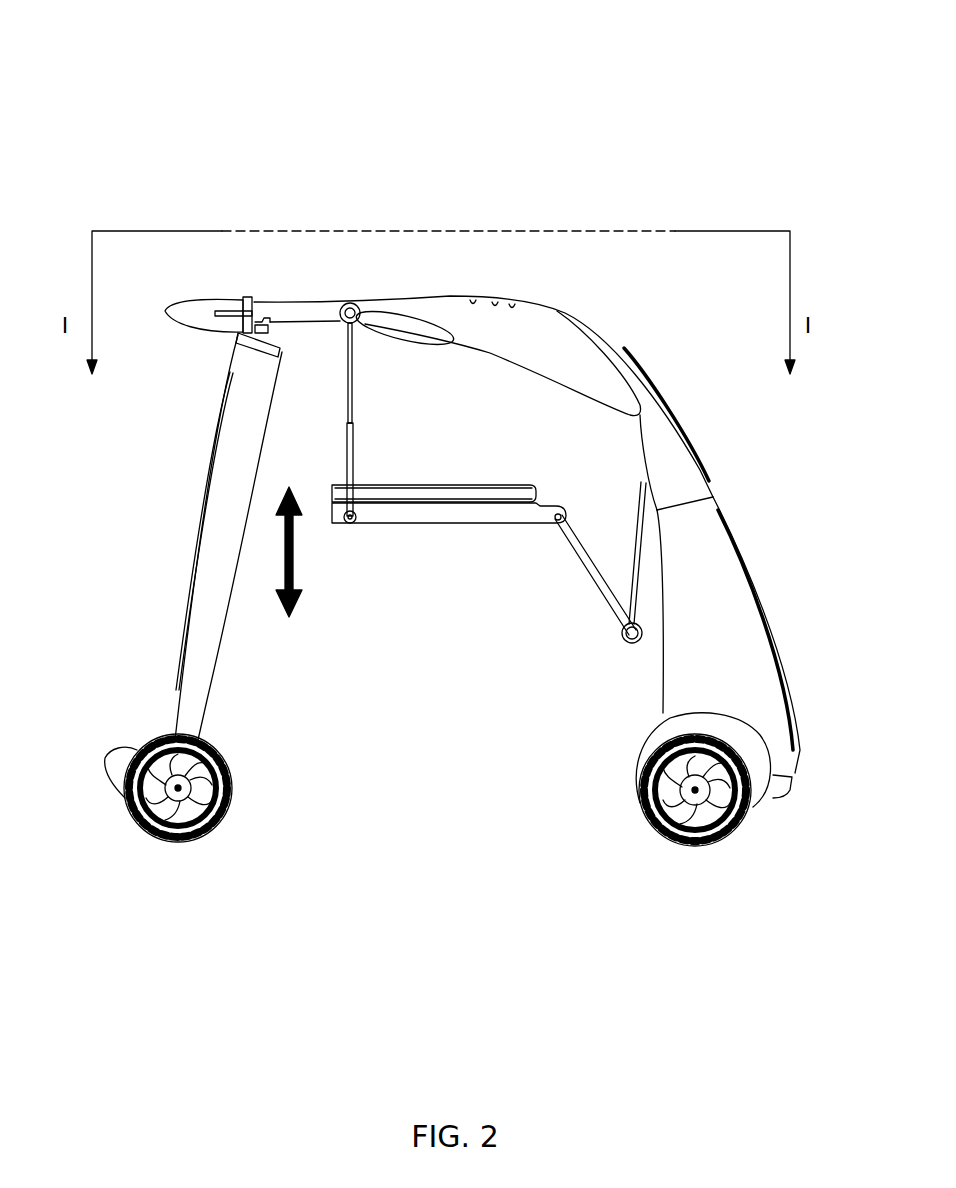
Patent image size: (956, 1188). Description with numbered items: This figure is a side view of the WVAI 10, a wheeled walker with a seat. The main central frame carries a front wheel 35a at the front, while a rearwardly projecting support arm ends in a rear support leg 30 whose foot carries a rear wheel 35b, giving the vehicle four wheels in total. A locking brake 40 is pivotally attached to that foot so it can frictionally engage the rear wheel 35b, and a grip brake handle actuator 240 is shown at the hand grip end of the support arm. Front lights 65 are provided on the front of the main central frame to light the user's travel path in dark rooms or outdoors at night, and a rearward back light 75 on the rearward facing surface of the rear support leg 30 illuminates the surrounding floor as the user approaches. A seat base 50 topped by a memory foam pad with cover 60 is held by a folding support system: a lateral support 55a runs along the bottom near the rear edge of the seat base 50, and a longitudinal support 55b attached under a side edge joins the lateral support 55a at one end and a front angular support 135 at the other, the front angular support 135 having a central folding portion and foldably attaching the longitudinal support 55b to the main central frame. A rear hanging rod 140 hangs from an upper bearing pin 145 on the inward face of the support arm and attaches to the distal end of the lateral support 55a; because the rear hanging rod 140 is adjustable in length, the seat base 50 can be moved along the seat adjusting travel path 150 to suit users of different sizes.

The WVAI 10 is at (114, 155).
The grip brake handle actuator 240 is at (231, 312).
The upper bearing pin 145 is at (356, 303).
The rear hanging rod 140 is at (355, 402).
The memory foam pad with cover 60 is at (430, 490).
The front lights 65 is at (684, 422).
The rear support leg 30 is at (215, 498).
The rearward back light 75 is at (195, 545).
The lateral support 55a is at (350, 523).
The seat base 50 is at (427, 507).
The longitudinal support 55b is at (448, 525).
The seat adjusting travel path 150 is at (300, 563).
The front angular support 135 is at (602, 592).
The locking brake 40 is at (117, 770).
The rear wheel 35b is at (178, 827).
The front wheel 35a is at (713, 837).